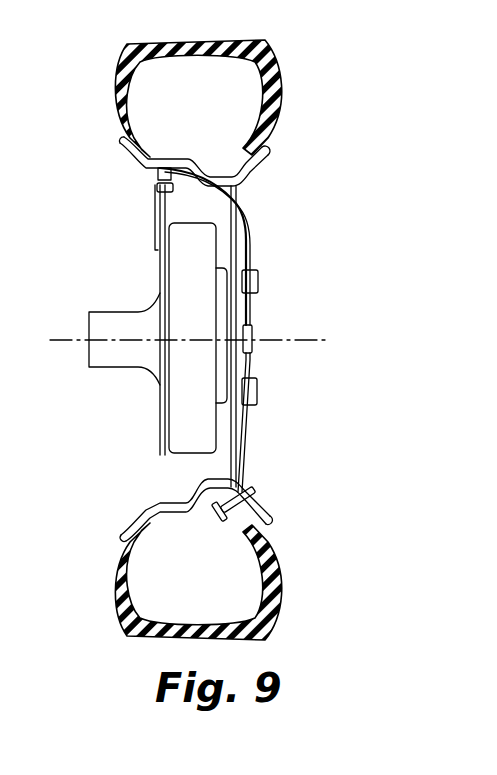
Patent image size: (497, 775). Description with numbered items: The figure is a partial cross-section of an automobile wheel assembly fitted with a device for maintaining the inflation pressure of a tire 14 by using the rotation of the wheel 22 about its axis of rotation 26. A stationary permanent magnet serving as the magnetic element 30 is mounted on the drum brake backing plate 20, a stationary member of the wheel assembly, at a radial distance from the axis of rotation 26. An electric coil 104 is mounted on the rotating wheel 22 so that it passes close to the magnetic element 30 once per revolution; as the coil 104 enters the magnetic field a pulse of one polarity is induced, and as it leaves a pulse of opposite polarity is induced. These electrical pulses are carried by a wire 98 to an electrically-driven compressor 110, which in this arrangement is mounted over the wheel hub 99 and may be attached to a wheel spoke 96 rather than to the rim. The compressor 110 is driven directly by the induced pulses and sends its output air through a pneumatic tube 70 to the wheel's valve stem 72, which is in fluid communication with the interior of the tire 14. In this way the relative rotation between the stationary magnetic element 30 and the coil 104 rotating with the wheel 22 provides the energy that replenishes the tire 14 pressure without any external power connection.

The tire 14 is at (279, 74).
The wheel 22 is at (240, 171).
The wheel spoke 96 is at (238, 206).
The electric coil 104 is at (157, 175).
The magnetic element 30 is at (157, 187).
The drum brake backing plate 20 is at (160, 270).
The wire 98 is at (252, 278).
The electrically-driven compressor 110 is at (249, 325).
The axis of rotation 26 is at (292, 339).
The wheel hub 99 is at (251, 357).
The pneumatic tube 70 is at (250, 448).
The valve stem 72 is at (248, 504).